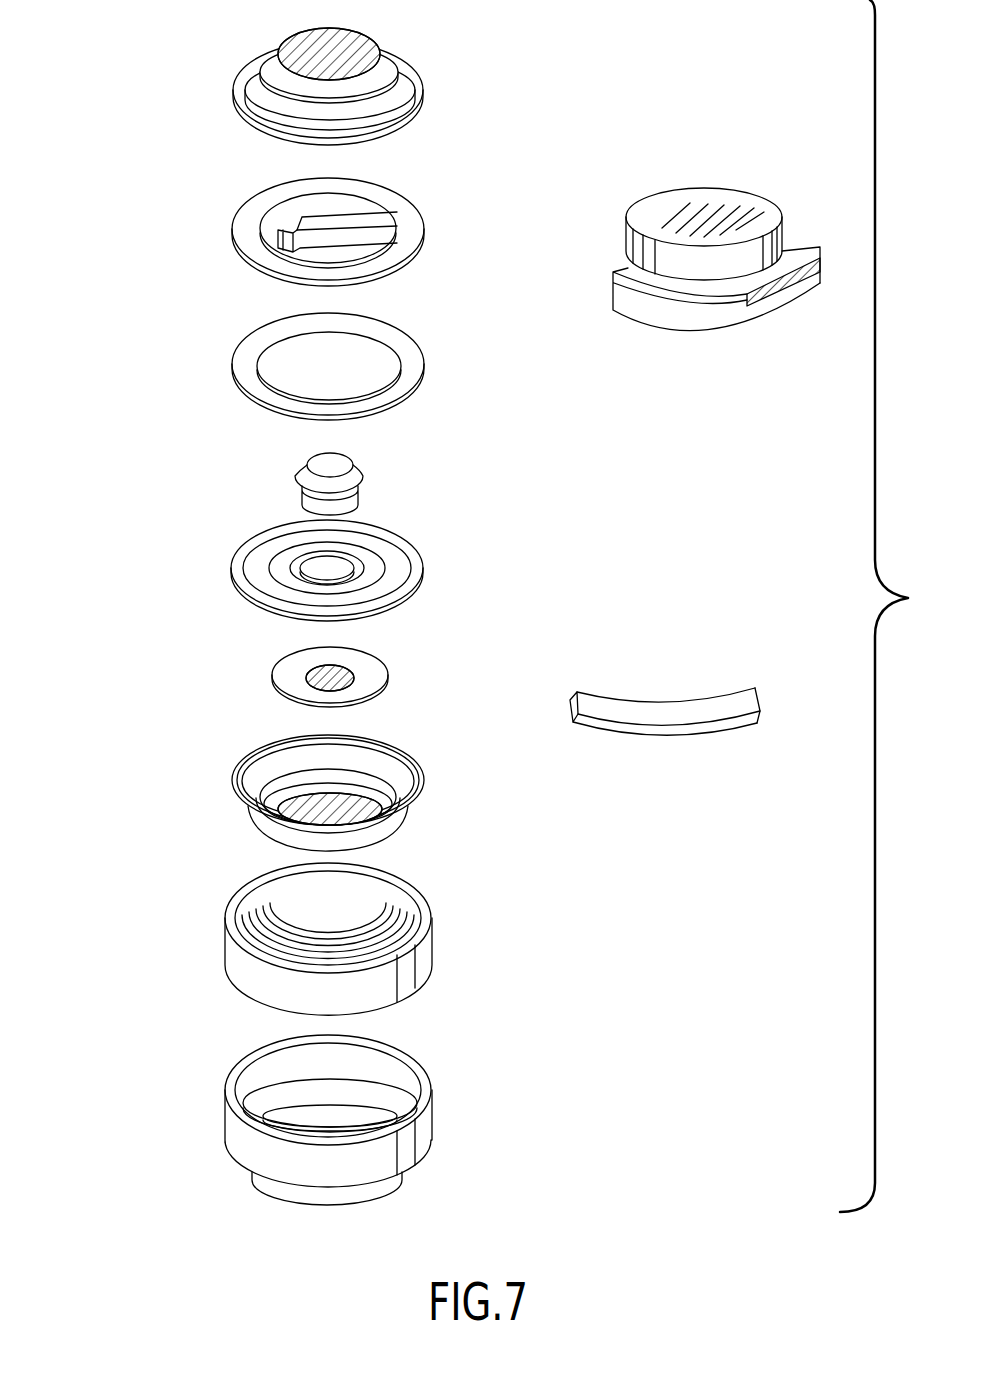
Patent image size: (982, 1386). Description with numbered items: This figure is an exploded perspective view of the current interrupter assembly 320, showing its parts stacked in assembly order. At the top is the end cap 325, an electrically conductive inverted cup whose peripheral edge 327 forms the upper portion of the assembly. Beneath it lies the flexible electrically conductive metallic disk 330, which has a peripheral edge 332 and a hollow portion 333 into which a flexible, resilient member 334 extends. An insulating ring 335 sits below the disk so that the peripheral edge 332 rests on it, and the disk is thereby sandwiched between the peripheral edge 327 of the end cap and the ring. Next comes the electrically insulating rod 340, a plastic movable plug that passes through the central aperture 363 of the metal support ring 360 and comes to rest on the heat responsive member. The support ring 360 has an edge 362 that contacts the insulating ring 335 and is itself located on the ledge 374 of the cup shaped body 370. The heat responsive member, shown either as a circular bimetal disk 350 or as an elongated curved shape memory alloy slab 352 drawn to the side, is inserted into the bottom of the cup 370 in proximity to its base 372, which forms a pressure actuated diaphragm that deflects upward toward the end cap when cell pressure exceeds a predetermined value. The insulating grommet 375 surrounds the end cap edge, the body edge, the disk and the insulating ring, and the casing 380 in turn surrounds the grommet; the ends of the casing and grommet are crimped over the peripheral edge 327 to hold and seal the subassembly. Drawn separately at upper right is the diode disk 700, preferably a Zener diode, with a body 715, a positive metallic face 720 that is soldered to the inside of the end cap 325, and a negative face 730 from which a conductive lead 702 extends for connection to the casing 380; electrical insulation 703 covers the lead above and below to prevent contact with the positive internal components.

The current interrupter assembly 320 is at (132, 315).
The end cap 325 is at (425, 78).
The peripheral edge of end cap 327 is at (238, 85).
The flexible electrically conductive metallic disk 330 is at (425, 228).
The peripheral edge of disk 332 is at (240, 226).
The hollow portion of disk 333 is at (368, 247).
The flexible resilient member 334 is at (365, 220).
The insulating ring 335 is at (425, 360).
The electrically insulating rod 340 is at (360, 463).
The flexible heat responsive member 350 is at (387, 670).
The heat responsive member 352 is at (717, 697).
The metal support ring 360 is at (422, 570).
The edge of metal support ring 362 is at (410, 548).
The central aperture 363 is at (308, 578).
The cup shaped body 370 is at (418, 765).
The base of cup shaped body 372 is at (283, 818).
The ledge 374 is at (263, 780).
The insulating grommet 375 is at (417, 958).
The casing 380 is at (412, 1145).
The diode disk 700 is at (738, 175).
The conductive lead 702 is at (822, 263).
The electrical insulation 703 is at (795, 242).
The body of diode disk 715 is at (640, 255).
The positive metallic face 720 is at (667, 205).
The negative face 730 is at (690, 300).